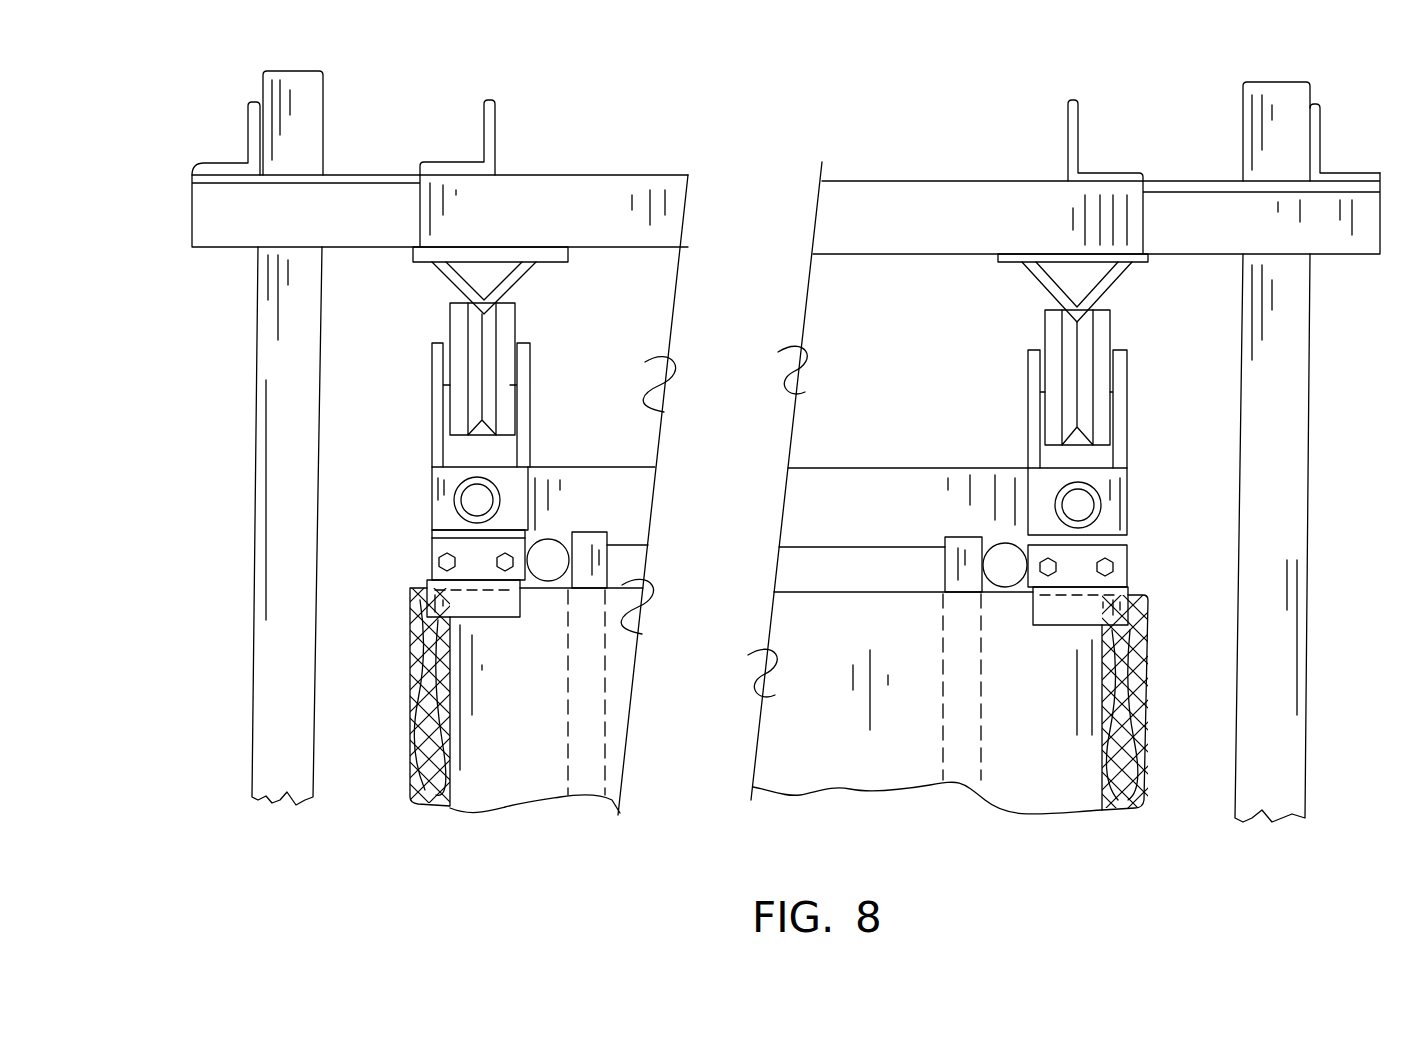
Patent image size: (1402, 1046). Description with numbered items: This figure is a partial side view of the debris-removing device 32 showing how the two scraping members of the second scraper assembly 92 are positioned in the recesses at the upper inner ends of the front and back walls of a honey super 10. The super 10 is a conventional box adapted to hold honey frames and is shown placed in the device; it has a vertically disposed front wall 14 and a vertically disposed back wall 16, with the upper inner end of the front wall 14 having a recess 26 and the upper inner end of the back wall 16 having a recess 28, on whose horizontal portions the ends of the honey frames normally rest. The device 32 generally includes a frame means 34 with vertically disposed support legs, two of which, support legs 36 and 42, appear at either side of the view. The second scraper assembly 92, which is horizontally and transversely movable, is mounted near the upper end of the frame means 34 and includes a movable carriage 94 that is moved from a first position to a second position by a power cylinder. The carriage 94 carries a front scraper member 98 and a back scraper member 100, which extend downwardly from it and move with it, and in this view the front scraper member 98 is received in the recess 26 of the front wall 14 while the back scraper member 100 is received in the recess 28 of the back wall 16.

The honey super 10 is at (418, 815).
The front wall 14 is at (417, 653).
The back wall 16 is at (1133, 703).
The recess 26 is at (430, 600).
The recess 28 is at (1085, 615).
The device for removing debris 32 is at (935, 155).
The frame means 34 is at (255, 493).
The support leg 36 is at (283, 607).
The support leg 42 is at (1285, 440).
The second scraper assembly 92 is at (539, 412).
The carriage 94 is at (430, 470).
The front scraper member 98 is at (498, 605).
The back scraper member 100 is at (1107, 637).